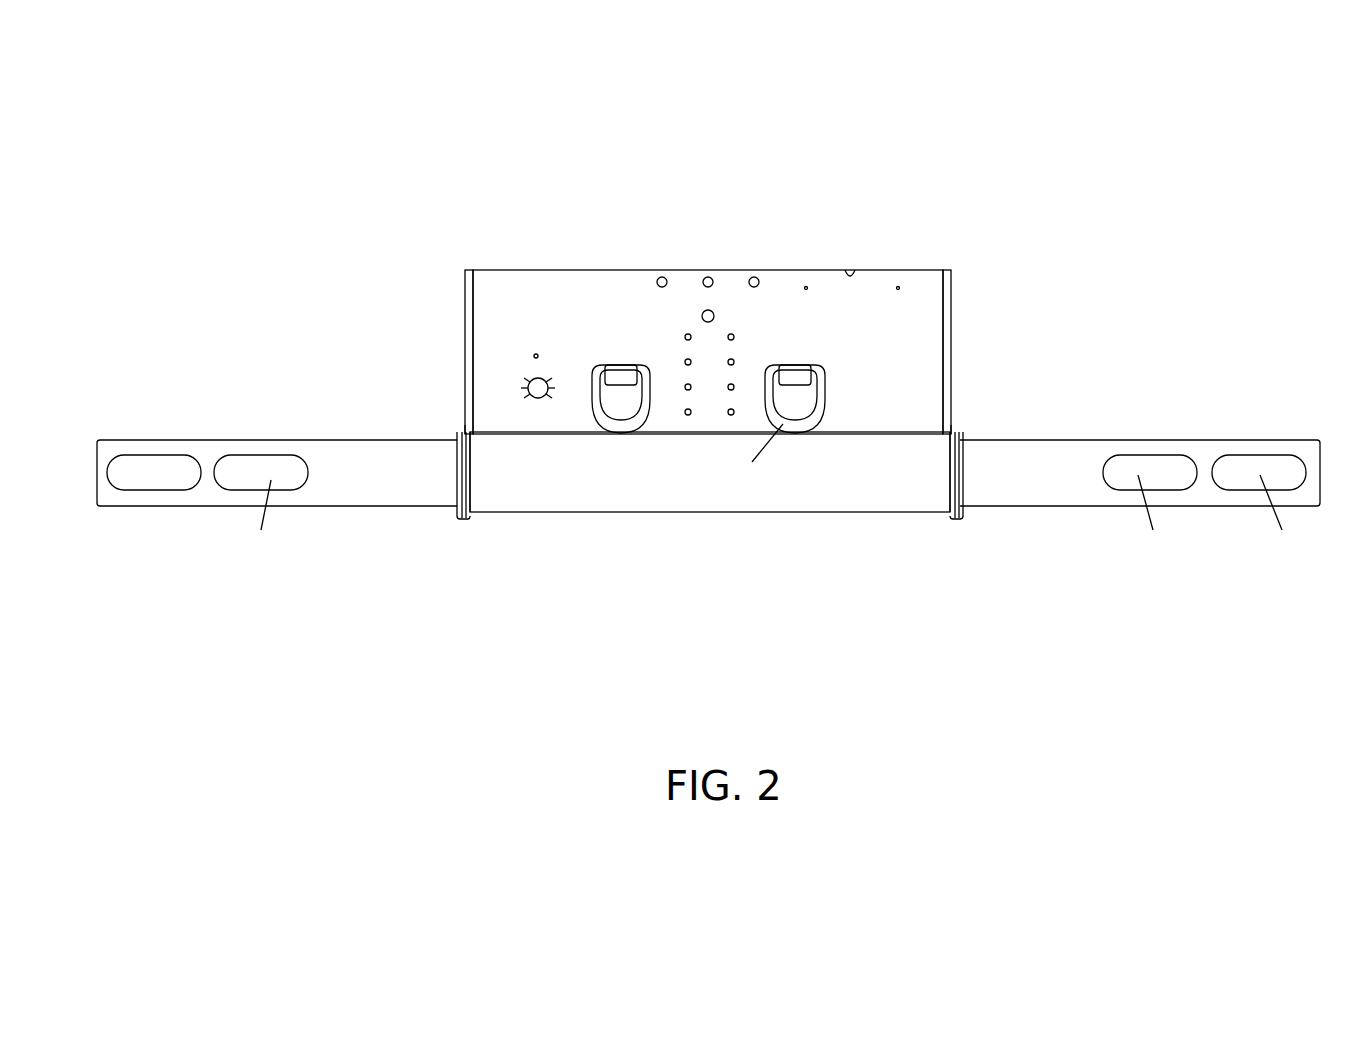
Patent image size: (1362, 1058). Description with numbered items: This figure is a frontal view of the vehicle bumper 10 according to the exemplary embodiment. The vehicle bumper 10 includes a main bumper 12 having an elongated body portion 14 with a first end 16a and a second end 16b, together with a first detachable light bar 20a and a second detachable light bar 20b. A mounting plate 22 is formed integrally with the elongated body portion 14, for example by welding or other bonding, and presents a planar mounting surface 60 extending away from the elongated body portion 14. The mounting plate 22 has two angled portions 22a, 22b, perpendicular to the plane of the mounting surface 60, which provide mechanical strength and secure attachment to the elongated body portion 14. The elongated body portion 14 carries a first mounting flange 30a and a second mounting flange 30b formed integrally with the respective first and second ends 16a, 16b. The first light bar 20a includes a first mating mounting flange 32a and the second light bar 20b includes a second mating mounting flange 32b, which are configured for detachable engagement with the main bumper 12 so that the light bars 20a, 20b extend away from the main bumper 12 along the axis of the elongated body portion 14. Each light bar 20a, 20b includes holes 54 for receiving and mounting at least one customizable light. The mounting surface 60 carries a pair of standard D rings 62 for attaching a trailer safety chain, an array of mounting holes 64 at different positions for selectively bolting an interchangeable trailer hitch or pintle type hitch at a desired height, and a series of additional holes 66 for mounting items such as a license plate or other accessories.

The vehicle bumper 10 is at (1252, 142).
The main bumper 12 is at (512, 676).
The elongated body portion 14 is at (659, 497).
The first end 16a is at (481, 500).
The second end 16b is at (930, 503).
The first detachable light bar 20a is at (213, 437).
The second detachable light bar 20b is at (1118, 440).
The mounting plate 22 is at (515, 271).
The angled portion 22a is at (465, 305).
The angled portion 22b is at (942, 316).
The first mounting flange 30a is at (466, 510).
The second mounting flange 30b is at (951, 515).
The first mating mounting flange 32a is at (460, 428).
The second mating mounting flange 32b is at (952, 427).
The holes 54 is at (164, 480).
The mounting surface 60 is at (540, 359).
The D rings 62 is at (617, 423).
The array of mounting holes 64 is at (768, 348).
The additional holes 66 is at (707, 280).